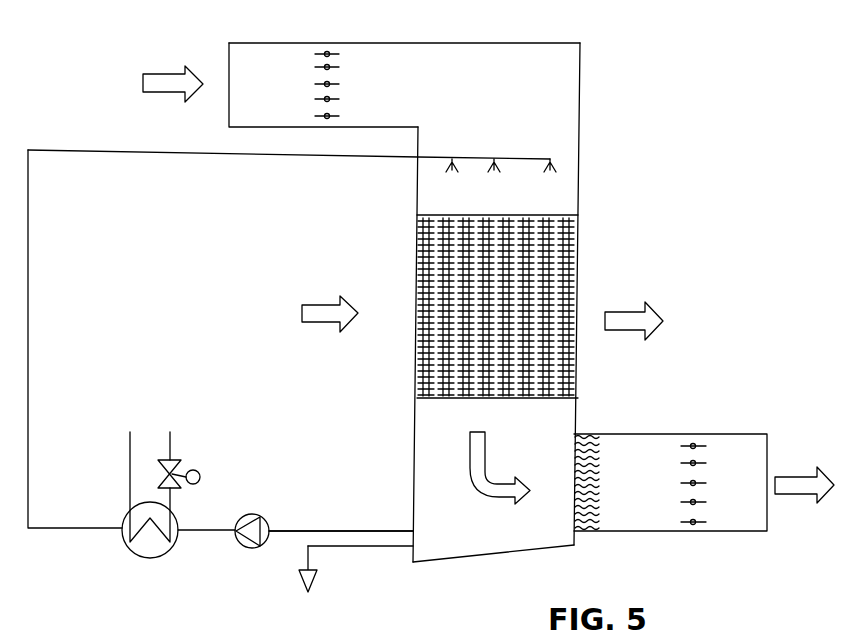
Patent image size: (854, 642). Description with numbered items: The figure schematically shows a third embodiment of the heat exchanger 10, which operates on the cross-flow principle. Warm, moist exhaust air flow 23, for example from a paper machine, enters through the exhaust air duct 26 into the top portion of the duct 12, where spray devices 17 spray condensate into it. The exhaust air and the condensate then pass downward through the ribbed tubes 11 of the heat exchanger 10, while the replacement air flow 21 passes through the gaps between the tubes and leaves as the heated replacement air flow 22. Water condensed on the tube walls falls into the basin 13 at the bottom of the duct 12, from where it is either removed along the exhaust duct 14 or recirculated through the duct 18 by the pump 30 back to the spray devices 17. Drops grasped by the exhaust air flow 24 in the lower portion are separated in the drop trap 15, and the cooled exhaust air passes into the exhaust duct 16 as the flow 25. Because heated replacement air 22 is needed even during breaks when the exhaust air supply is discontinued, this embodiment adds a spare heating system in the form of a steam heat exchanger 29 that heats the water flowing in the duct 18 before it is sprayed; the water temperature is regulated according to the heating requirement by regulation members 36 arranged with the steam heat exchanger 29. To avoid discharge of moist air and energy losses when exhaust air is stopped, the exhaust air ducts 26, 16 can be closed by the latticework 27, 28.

The heat exchanger 10 is at (632, 218).
The ribbed tubes 11 is at (564, 290).
The duct 12 is at (574, 410).
The basin 13 is at (443, 550).
The exhaust duct 14 is at (355, 550).
The drop trap 15 is at (586, 533).
The exhaust duct 16 is at (640, 522).
The spray devices 17 is at (494, 160).
The duct 18 is at (295, 530).
The replacement air flow 21 is at (322, 325).
The heated replacement air flow 22 is at (655, 318).
The exhaust air flow 23 is at (165, 92).
The exhaust air flow 24 is at (488, 490).
The flow 25 is at (833, 478).
The exhaust air duct 26 is at (298, 46).
The latticework 27 is at (327, 54).
The latticework 28 is at (693, 440).
The steam heat exchanger 29 is at (150, 548).
The pump 30 is at (252, 550).
The regulation members 36 is at (178, 472).